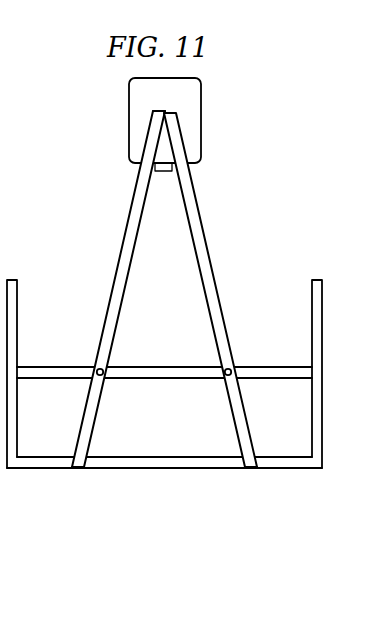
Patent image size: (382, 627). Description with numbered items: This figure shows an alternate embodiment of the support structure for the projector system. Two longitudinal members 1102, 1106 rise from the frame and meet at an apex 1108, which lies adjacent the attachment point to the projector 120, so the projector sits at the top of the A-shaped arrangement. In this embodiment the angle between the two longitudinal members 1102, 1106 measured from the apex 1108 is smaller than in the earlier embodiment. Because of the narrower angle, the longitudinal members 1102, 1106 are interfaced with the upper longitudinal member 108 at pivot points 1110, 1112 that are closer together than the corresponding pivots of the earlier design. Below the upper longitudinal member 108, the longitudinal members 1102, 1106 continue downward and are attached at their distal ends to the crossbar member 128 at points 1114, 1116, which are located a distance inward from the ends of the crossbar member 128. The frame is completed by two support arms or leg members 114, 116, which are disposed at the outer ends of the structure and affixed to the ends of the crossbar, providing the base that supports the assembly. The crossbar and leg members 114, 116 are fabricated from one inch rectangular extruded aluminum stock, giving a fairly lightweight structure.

The projector 120 is at (203, 121).
The apex 1108 is at (162, 118).
The longitudinal member 1106 is at (132, 210).
The longitudinal member 1102 is at (202, 222).
The leg member 114 is at (18, 300).
The leg member 116 is at (312, 300).
The upper longitudinal member 108 is at (262, 367).
The crossbar member 128 is at (163, 469).
The pivot point 1112 is at (115, 361).
The pivot point 1110 is at (218, 390).
The attachment point 1116 is at (77, 469).
The attachment point 1114 is at (252, 469).